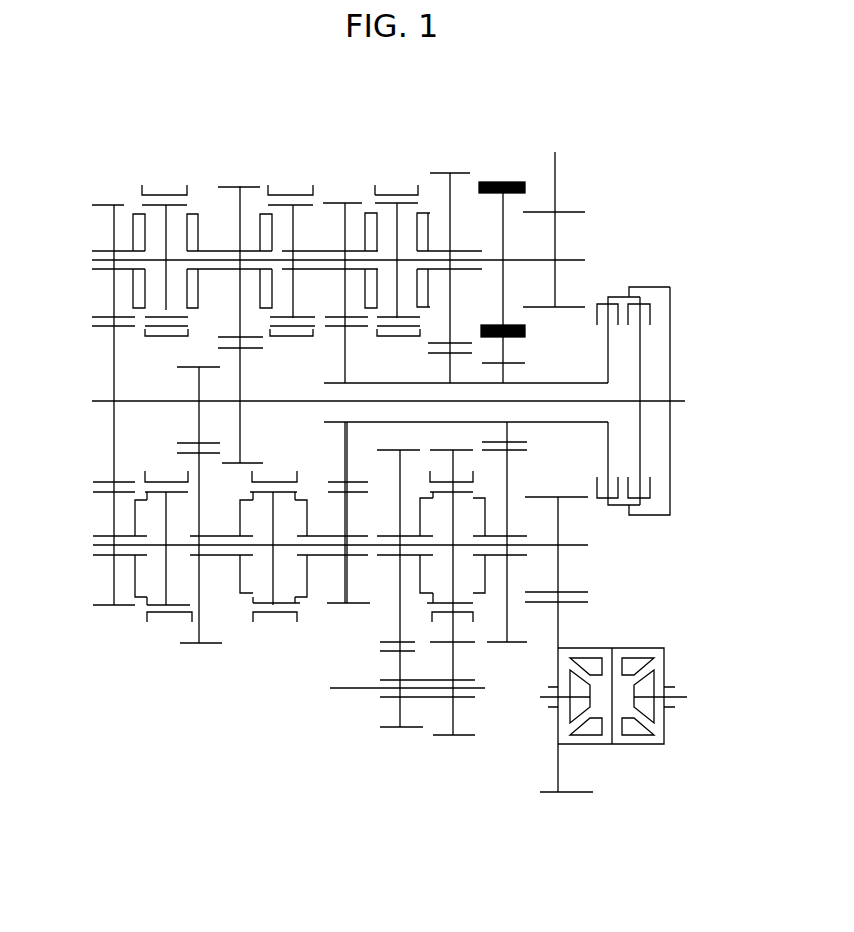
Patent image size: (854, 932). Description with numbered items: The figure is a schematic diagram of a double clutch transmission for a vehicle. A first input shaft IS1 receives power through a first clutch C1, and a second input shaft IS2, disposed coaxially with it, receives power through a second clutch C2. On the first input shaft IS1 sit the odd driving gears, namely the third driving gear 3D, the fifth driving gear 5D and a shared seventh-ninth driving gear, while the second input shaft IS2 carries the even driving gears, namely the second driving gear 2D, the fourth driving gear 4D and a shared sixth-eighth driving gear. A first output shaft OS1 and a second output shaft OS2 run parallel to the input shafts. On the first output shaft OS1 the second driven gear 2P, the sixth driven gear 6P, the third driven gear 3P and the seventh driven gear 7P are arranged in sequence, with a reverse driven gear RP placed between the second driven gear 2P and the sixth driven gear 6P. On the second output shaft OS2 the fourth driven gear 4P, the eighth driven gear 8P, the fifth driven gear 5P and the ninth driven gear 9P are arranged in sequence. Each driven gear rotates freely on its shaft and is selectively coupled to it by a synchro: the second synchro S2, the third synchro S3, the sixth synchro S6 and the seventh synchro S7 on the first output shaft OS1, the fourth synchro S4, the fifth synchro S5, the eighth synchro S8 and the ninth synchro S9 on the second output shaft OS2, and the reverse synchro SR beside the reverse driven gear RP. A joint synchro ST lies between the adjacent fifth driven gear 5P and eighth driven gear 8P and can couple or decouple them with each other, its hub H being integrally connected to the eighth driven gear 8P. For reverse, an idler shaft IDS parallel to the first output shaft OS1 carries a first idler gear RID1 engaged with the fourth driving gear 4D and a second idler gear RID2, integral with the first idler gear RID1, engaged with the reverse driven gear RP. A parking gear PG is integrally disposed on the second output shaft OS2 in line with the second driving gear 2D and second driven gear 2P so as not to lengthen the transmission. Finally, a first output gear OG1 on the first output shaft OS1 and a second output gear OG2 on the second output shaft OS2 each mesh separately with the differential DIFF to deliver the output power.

The second output shaft OS2 is at (572, 258).
The first input shaft IS1 is at (583, 400).
The second input shaft IS2 is at (577, 422).
The first output shaft OS1 is at (577, 543).
The idler shaft IDS is at (353, 690).
The second output gear OG2 is at (555, 212).
The parking gear PG is at (503, 183).
The first output gear OG1 is at (585, 591).
The differential DIFF is at (648, 647).
The first clutch C1 is at (642, 316).
The second clutch C2 is at (608, 348).
The fourth driving gear 4D is at (466, 350).
The second driving gear 2D is at (517, 362).
The fourth driven gear 4P is at (458, 173).
The fourth synchro S4 is at (423, 212).
The eighth synchro S8 is at (370, 212).
The eighth driven gear 8P is at (345, 203).
The hub H is at (293, 223).
The joint synchro ST is at (265, 213).
The fifth driven gear 5P is at (240, 186).
The fifth driving gear 5D is at (237, 463).
The third driving gear 3D is at (183, 442).
The third driven gear 3P is at (188, 643).
The ninth driven gear 9P is at (113, 205).
The seventh driven gear 7P is at (103, 607).
The ninth synchro S9 is at (142, 214).
The fifth synchro S5 is at (193, 214).
The seventh synchro S7 is at (142, 603).
The third synchro S3 is at (245, 597).
The sixth synchro S6 is at (293, 615).
The sixth driven gear 6P is at (333, 603).
The reverse driven gear RP is at (383, 643).
The second idler gear RID2 is at (388, 730).
The first idler gear RID1 is at (463, 737).
The reverse synchro SR is at (432, 593).
The second synchro S2 is at (485, 593).
The second driven gear 2P is at (520, 642).